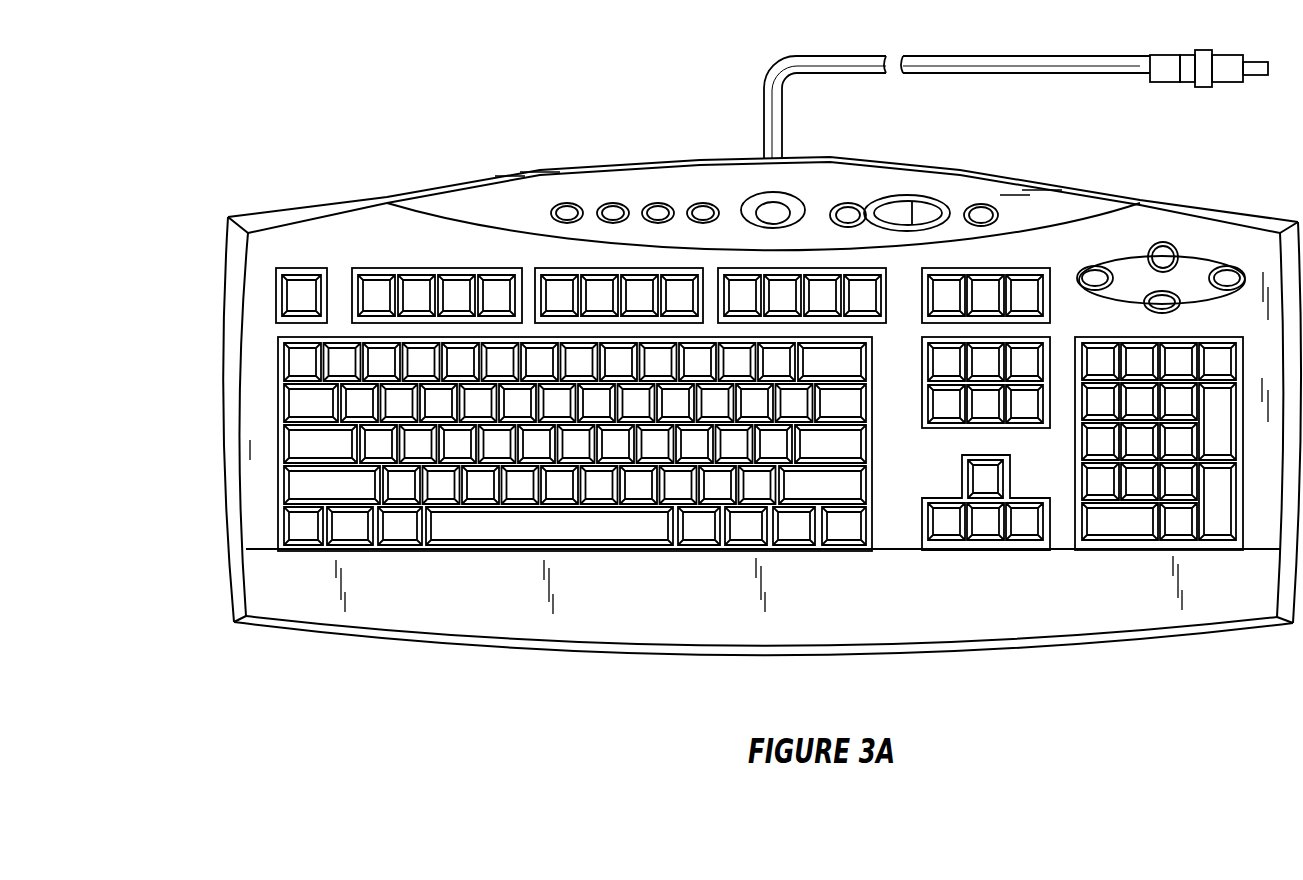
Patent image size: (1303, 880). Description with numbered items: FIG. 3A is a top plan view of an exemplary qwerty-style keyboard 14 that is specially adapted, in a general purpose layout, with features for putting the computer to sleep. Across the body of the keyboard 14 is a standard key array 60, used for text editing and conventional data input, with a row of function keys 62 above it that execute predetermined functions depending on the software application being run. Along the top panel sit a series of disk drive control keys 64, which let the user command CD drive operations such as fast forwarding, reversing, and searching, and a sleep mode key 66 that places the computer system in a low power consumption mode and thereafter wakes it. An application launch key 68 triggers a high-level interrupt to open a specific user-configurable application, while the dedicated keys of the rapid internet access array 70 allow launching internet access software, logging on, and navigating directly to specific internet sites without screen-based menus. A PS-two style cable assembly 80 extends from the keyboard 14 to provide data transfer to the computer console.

The keyboard 14 is at (232, 566).
The standard key array 60 is at (252, 399).
The function keys 62 is at (540, 266).
The disk drive control keys 64 is at (700, 208).
The sleep mode key 66 is at (772, 212).
The application launch key 68 is at (982, 214).
The rapid internet access array 70 is at (1193, 257).
The PS/2 style cable assembly 80 is at (1047, 75).